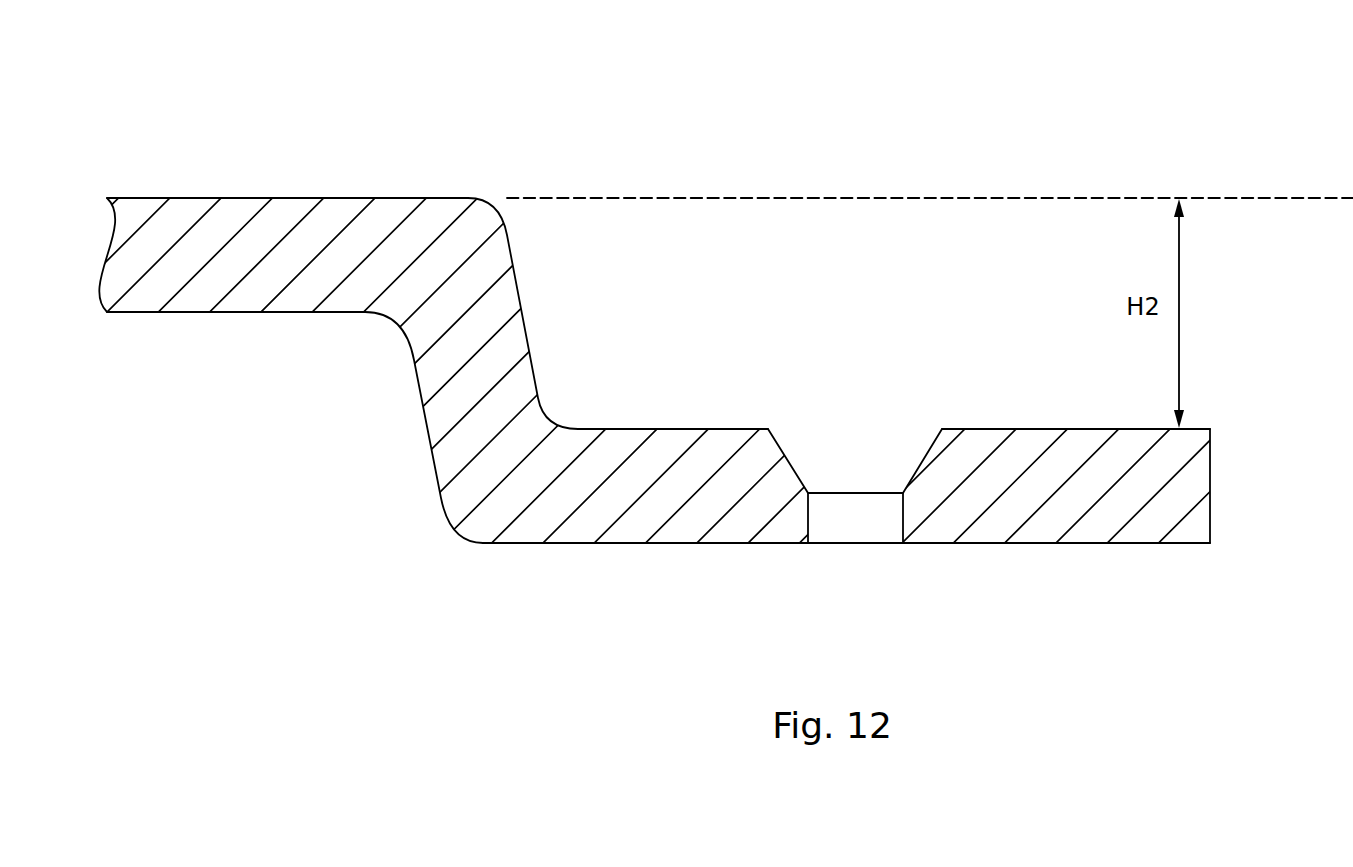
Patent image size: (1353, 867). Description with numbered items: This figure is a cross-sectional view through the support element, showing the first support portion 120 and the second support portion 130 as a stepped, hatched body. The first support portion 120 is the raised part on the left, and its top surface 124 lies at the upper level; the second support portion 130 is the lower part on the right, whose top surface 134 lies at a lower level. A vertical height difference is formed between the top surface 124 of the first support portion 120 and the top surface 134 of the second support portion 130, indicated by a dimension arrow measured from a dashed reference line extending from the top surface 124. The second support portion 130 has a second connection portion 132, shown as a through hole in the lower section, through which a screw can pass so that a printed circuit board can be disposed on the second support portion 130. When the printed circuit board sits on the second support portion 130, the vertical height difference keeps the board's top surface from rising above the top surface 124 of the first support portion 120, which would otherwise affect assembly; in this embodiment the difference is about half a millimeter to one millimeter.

The first support portion 120 is at (297, 197).
The top surface of the first support portion 124 is at (396, 197).
The second support portion 130 is at (720, 545).
The second connection portion 132 is at (859, 547).
The top surface of the second support portion 134 is at (1040, 428).